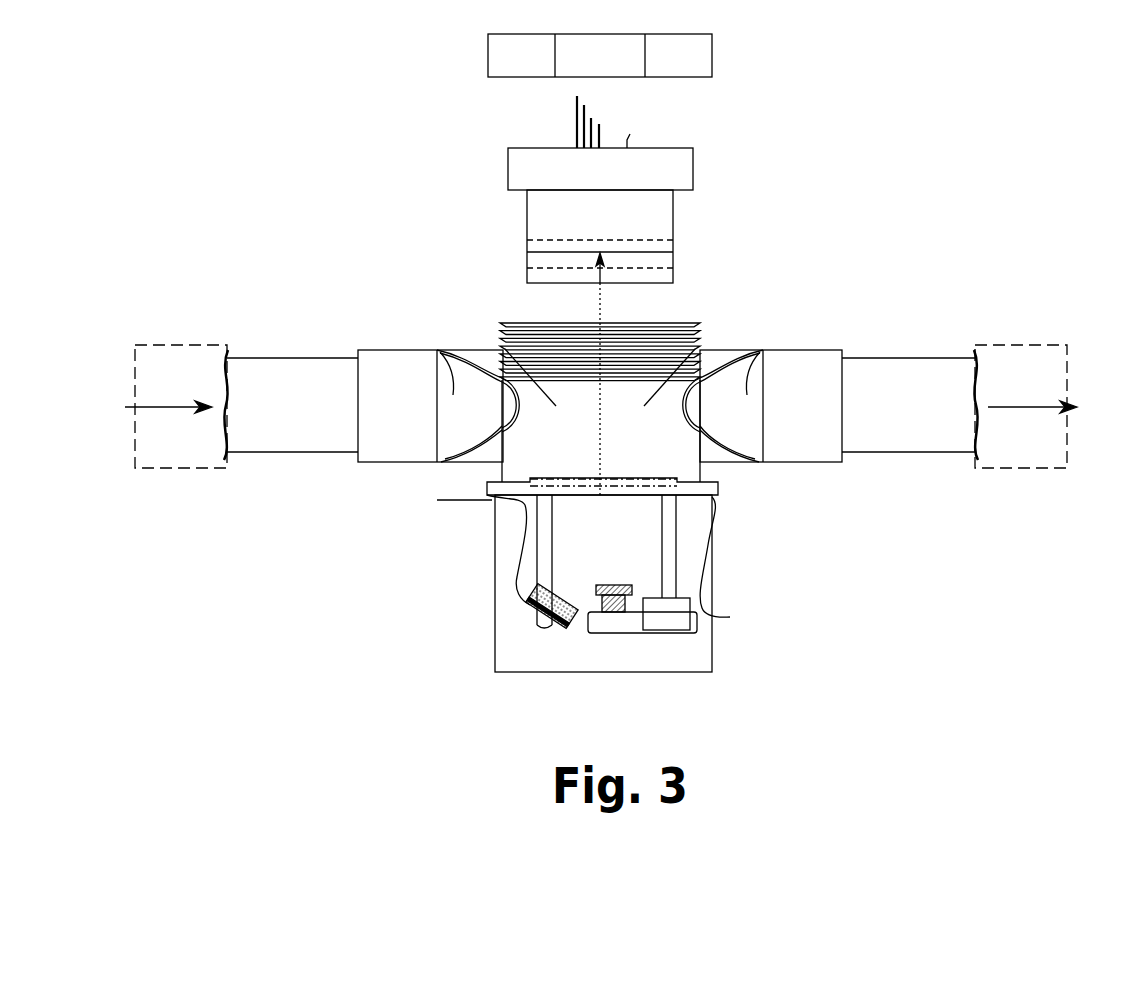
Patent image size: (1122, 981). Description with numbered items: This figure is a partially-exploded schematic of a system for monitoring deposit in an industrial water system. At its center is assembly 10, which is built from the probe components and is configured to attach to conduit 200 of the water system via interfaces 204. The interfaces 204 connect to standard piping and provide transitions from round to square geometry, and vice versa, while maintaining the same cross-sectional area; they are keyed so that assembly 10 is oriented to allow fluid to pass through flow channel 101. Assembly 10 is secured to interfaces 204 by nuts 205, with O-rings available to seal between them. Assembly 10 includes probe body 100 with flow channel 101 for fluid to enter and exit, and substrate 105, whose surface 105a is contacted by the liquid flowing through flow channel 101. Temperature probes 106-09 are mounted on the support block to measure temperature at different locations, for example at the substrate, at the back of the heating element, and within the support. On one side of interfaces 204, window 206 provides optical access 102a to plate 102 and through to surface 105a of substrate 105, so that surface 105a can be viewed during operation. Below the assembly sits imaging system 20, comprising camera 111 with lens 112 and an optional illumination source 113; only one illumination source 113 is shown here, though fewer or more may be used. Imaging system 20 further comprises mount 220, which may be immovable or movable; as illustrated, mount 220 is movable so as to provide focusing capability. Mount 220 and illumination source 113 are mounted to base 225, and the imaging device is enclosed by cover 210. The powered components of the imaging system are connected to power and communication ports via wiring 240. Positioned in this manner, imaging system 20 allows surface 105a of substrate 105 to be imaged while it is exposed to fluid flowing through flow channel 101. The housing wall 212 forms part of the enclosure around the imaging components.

The nut 205 is at (500, 52).
The temperature probes 106-09 is at (573, 104).
The assembly 10 is at (795, 122).
The probe body 100 is at (693, 166).
The flow channel 101 is at (668, 258).
The plate 102 is at (668, 270).
The substrate 105 is at (527, 252).
The surface of substrate 105a is at (554, 257).
The optical access 102a is at (600, 497).
The interfaces 204 is at (503, 377).
The conduit 200 is at (200, 325).
The base 225 is at (487, 483).
The window 206 is at (640, 495).
The wiring 240 is at (437, 500).
The cover 210 is at (500, 679).
The housing wall 212 is at (703, 498).
The imaging system 20 is at (868, 490).
The illumination source 113 is at (533, 605).
The lens 112 is at (597, 634).
The camera 111 is at (653, 634).
The mount 220 is at (690, 615).